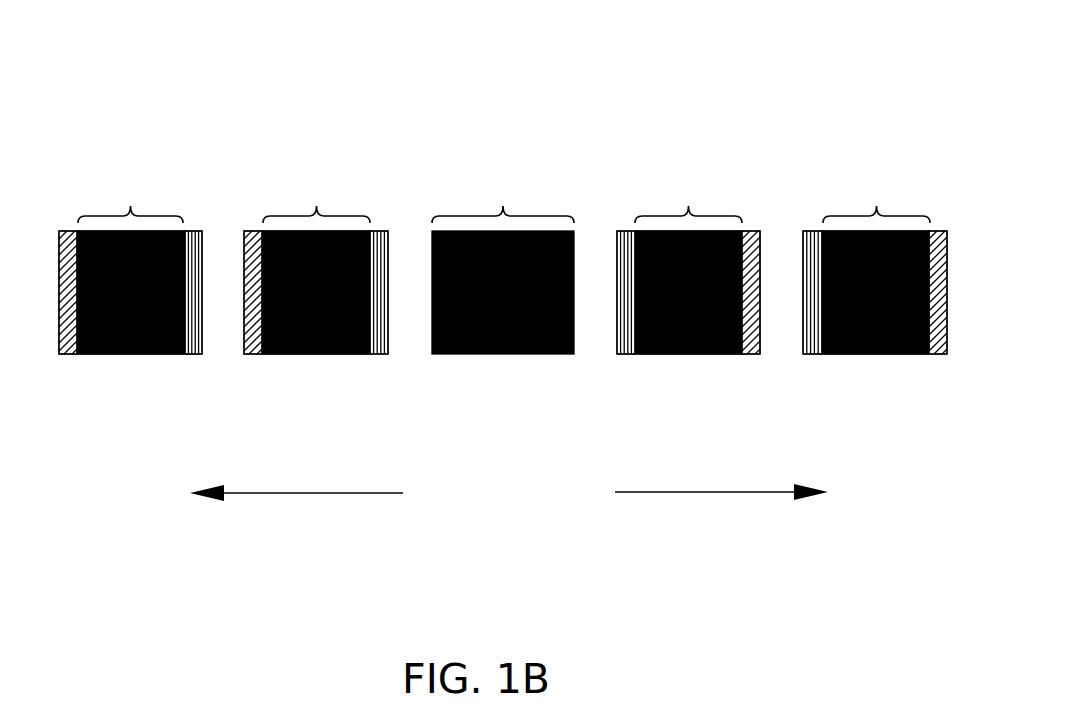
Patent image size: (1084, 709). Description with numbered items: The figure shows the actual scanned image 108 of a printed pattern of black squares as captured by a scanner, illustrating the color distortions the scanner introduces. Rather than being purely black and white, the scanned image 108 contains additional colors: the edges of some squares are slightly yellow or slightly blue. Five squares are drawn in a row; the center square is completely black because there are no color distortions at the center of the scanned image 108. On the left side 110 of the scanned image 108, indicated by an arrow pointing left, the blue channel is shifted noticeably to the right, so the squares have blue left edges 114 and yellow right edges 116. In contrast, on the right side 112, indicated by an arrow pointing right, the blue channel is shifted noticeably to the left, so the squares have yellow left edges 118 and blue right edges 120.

The scanned image 108 is at (637, 56).
The left side of scanned image 110 is at (296, 550).
The right side of scanned image 112 is at (721, 544).
The blue left edges 114 is at (69, 231).
The yellow right edges 116 is at (197, 231).
The yellow left edges 118 is at (630, 231).
The blue right edges 120 is at (757, 231).